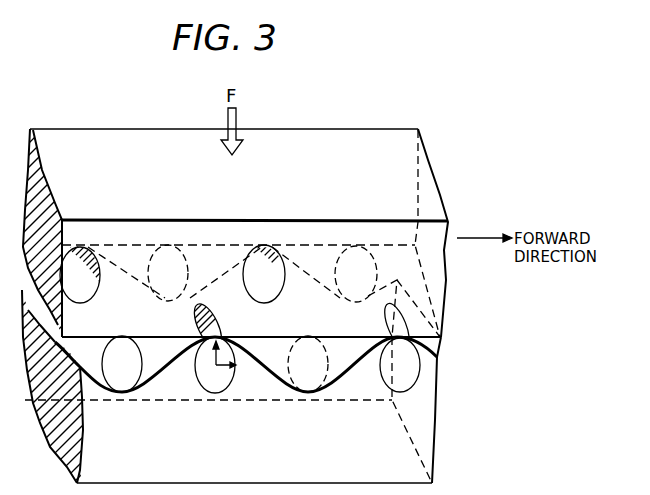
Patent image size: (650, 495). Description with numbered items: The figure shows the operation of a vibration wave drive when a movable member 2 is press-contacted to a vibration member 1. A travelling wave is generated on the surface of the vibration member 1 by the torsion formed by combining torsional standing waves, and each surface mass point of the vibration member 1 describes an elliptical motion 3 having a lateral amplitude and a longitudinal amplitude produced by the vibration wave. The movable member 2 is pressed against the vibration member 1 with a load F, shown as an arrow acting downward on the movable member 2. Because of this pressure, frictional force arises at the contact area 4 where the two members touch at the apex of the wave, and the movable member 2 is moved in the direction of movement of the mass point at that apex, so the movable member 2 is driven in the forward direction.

The vibration member 1 is at (430, 416).
The movable member 2 is at (323, 155).
The elliptical motion 3 is at (205, 385).
The contact area 4 is at (88, 253).